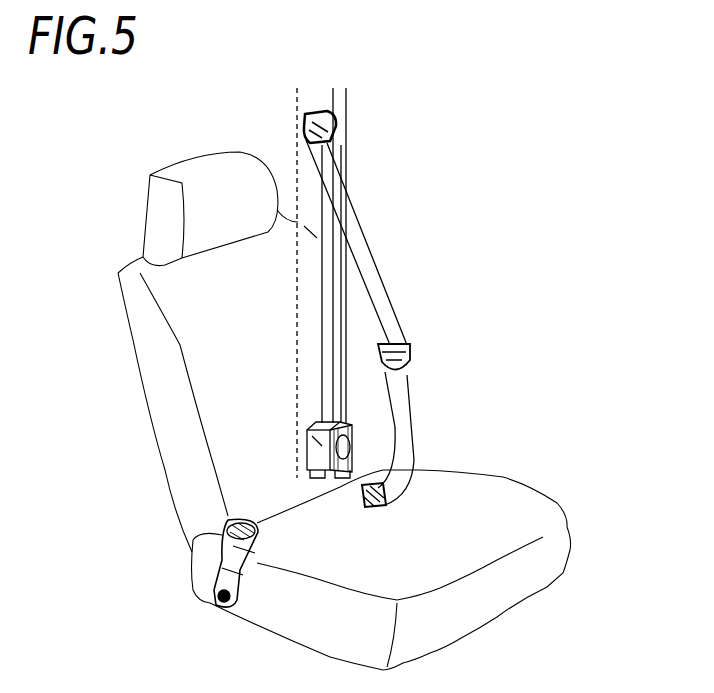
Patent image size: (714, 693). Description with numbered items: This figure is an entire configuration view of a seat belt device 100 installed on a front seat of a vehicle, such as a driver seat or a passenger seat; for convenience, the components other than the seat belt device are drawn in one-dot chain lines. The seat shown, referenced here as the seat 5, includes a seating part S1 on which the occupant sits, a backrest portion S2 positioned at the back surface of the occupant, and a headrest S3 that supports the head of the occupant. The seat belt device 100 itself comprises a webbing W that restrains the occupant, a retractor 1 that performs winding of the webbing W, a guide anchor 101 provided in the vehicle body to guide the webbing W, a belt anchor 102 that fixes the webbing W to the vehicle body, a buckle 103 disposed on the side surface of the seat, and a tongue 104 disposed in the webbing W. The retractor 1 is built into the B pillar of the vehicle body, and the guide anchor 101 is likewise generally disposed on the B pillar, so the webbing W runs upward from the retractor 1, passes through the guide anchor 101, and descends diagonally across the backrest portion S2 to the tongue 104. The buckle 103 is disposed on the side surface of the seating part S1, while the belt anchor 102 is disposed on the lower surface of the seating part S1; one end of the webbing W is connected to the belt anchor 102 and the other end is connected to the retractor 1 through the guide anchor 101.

The vehicle seat 5 is at (97, 242).
The seating part S1 is at (381, 570).
The backrest portion S2 is at (177, 404).
The headrest S3 is at (230, 209).
The seat belt device 100 is at (415, 292).
The retractor 1 is at (345, 105).
The guide anchor 101 is at (300, 118).
The webbing W is at (373, 244).
The tongue 104 is at (412, 350).
The belt anchor 102 is at (380, 508).
The buckle 103 is at (222, 553).